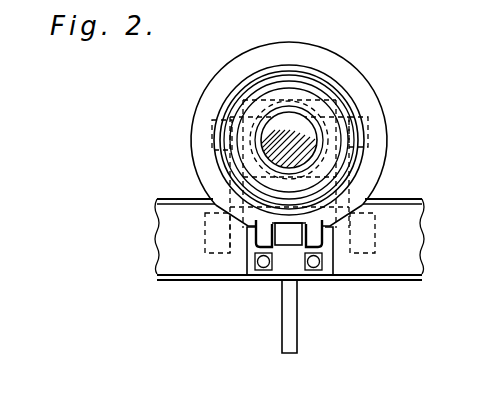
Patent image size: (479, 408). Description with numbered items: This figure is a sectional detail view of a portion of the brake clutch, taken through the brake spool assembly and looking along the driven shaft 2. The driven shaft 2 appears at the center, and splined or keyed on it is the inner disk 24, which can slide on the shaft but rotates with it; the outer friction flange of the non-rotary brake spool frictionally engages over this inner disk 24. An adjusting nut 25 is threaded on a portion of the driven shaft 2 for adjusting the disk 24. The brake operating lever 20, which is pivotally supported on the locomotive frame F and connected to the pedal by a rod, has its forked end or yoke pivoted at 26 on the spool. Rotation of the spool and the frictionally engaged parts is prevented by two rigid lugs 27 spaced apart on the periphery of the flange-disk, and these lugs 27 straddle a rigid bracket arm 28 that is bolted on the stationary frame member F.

The driven shaft 2 is at (294, 122).
The brake operating lever 20 is at (287, 325).
The inner disk 24 is at (335, 102).
The adjusting nut 25 is at (245, 105).
The pivot 26 is at (358, 132).
The rigid lugs 27 is at (265, 230).
The bracket arm 28 is at (293, 244).
The locomotive frame F is at (416, 267).